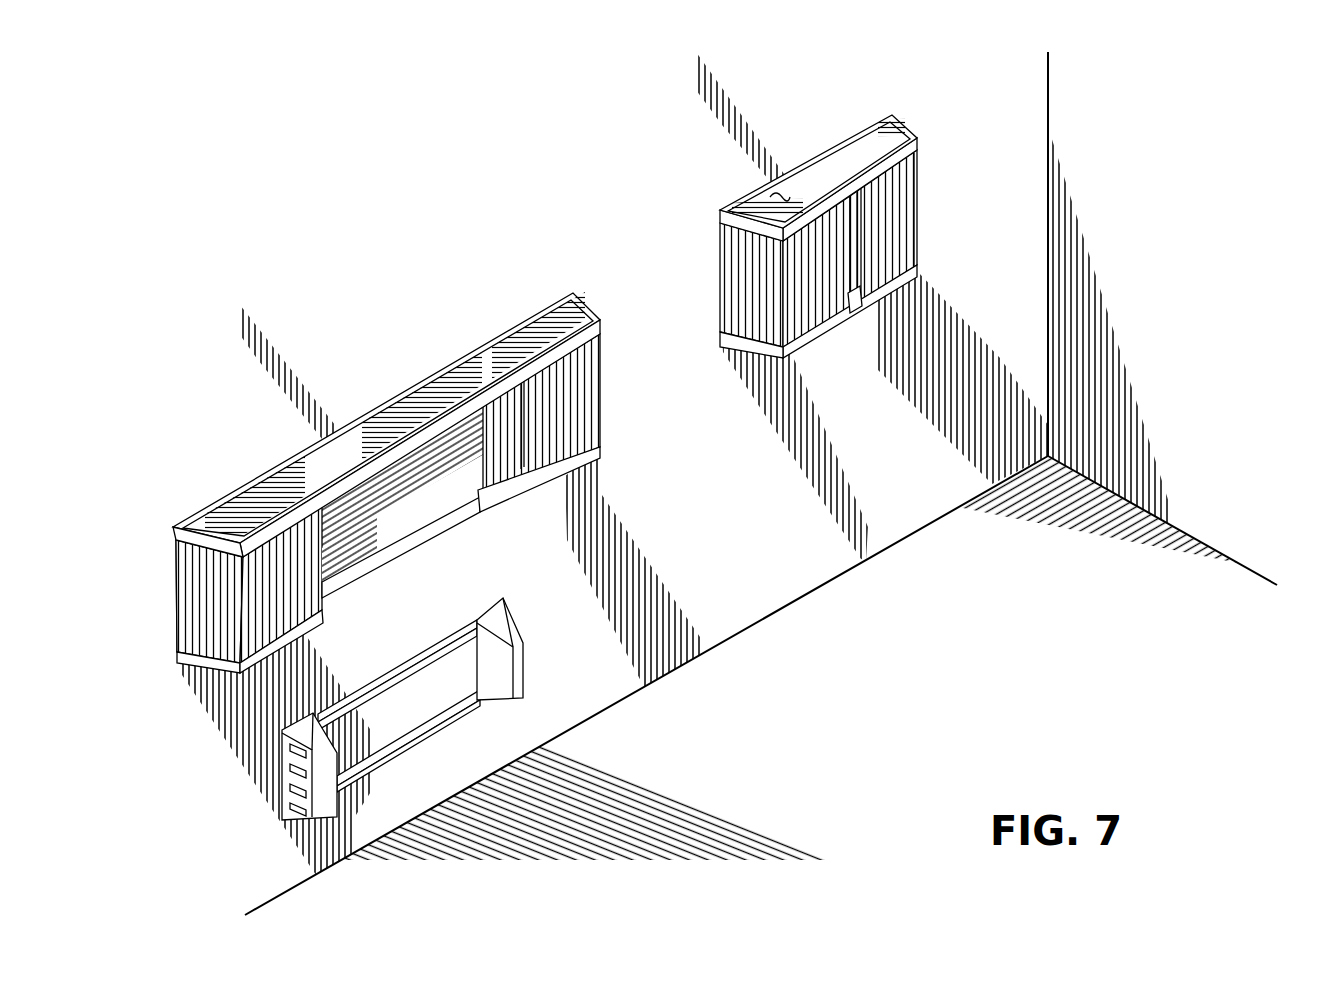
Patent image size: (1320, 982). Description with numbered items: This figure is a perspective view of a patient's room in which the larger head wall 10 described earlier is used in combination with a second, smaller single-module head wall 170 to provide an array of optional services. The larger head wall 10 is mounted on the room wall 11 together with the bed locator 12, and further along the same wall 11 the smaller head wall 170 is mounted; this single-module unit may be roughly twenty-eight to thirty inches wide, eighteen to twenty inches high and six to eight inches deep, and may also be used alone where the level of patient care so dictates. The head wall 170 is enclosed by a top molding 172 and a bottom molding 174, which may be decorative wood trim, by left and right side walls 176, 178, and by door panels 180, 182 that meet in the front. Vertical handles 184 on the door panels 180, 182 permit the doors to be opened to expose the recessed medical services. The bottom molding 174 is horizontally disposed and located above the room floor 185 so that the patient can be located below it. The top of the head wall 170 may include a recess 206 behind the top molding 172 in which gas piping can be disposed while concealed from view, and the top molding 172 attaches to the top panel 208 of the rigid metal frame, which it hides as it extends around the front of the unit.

The head wall 10 is at (371, 364).
The wall 11 is at (582, 229).
The bed locator 12 is at (403, 652).
The single-module head wall 170 is at (822, 220).
The top molding 172 is at (920, 147).
The bottom molding 174 is at (919, 271).
The left side wall 176 is at (722, 250).
The right side wall 178 is at (917, 185).
The door panel 180 is at (795, 272).
The door panel 182 is at (904, 222).
The vertical handles 184 is at (856, 316).
The room floor 185 is at (834, 657).
The recess 206 is at (845, 148).
The top panel 208 is at (760, 198).